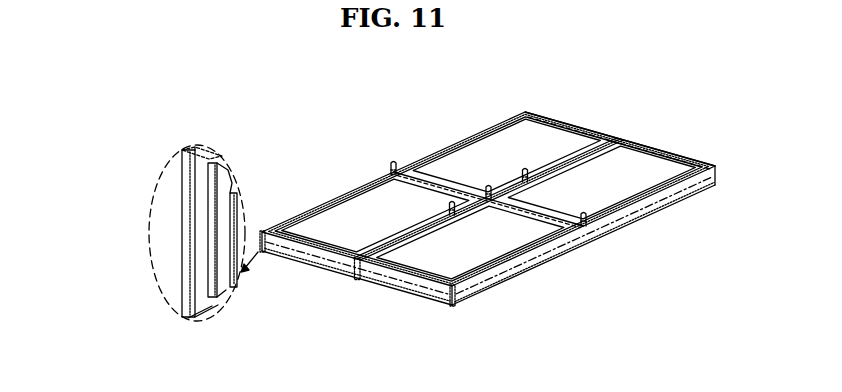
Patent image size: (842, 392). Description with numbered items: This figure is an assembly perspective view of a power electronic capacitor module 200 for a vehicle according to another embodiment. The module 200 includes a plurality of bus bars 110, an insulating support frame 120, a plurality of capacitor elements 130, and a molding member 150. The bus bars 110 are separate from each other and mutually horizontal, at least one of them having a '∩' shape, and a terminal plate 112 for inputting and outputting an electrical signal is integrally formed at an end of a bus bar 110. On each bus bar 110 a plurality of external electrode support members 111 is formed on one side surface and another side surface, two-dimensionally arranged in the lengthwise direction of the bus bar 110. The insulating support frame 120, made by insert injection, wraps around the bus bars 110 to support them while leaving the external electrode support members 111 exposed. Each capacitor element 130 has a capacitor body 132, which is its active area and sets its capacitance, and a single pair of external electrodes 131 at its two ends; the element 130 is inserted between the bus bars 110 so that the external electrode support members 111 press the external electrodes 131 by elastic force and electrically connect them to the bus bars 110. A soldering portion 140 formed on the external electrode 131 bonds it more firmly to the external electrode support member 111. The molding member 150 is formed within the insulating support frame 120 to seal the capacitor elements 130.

The power electronic capacitor module 200 is at (394, 84).
The bus bar 110 is at (190, 200).
The external electrode support member 111 is at (470, 297).
The terminal plate 112 is at (528, 178).
The insulating support frame 120 is at (325, 270).
The capacitor element 130 is at (545, 126).
The external electrode 131 is at (316, 206).
The capacitor body 132 is at (345, 226).
The soldering portion 140 is at (216, 178).
The molding member 150 is at (575, 122).